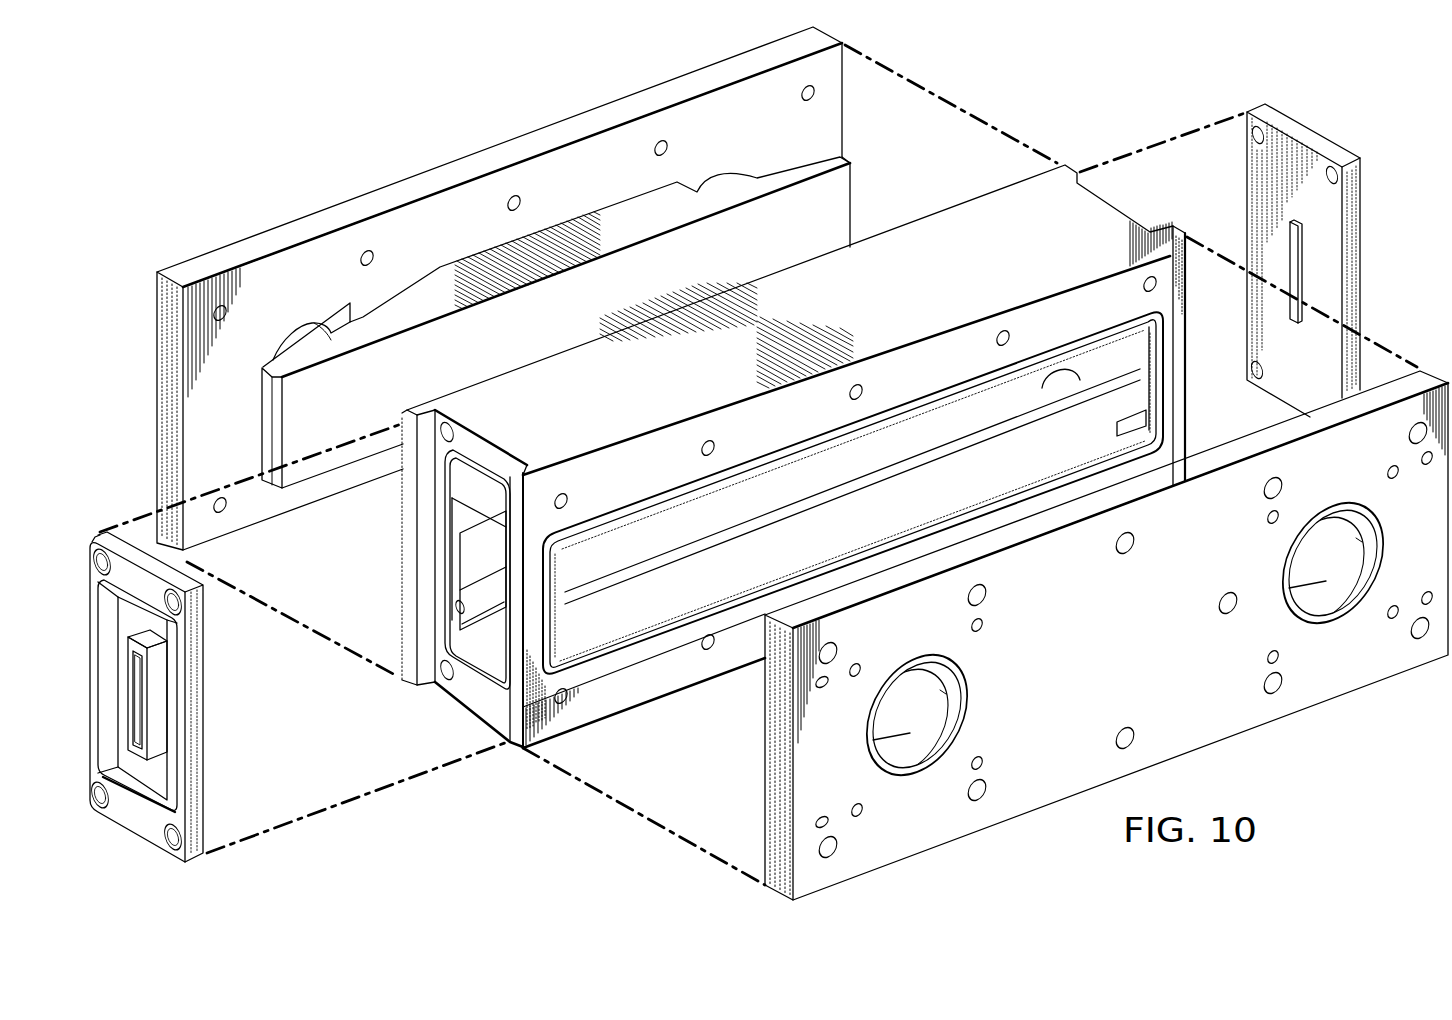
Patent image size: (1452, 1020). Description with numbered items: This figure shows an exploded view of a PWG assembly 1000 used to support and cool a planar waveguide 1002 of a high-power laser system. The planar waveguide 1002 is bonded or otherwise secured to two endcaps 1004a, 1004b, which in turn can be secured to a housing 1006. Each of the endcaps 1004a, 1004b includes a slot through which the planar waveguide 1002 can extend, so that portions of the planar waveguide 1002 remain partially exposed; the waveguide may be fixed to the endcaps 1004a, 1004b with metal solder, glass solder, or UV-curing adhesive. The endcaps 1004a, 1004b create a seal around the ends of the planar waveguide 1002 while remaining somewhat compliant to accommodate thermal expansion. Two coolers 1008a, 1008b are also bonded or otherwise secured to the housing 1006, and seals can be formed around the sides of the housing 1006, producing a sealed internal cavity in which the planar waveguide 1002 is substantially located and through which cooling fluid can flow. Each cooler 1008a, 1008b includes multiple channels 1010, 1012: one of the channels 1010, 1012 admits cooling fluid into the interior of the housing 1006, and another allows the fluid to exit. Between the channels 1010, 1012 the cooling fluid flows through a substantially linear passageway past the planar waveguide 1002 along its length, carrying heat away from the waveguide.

The PWG assembly 1000 is at (414, 104).
The planar waveguide 1002 is at (497, 630).
The endcap 1004a is at (138, 838).
The endcap 1004b is at (1313, 128).
The housing 1006 is at (793, 448).
The cooler 1008a is at (318, 213).
The cooler 1008b is at (1106, 635).
The channel 1010 is at (917, 748).
The channel 1012 is at (1330, 593).